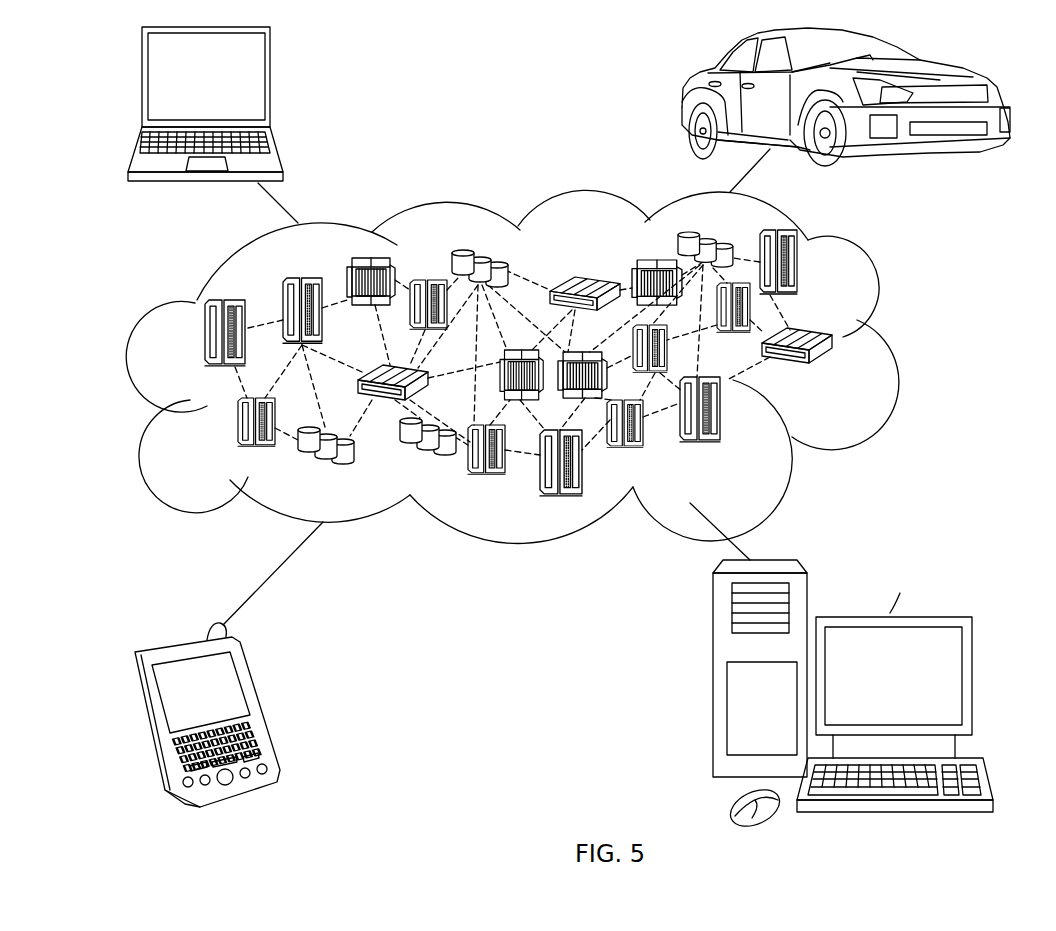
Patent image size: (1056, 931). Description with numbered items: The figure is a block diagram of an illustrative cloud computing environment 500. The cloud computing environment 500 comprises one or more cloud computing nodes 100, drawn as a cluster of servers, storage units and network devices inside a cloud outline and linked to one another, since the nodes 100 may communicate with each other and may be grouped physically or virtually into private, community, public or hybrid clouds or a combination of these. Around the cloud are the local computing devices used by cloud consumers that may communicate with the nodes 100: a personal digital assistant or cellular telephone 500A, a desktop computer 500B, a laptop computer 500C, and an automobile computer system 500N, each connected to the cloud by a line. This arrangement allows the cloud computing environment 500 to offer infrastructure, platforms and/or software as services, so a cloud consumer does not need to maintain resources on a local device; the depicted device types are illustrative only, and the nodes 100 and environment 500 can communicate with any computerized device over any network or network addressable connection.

The cloud computing nodes 100 is at (842, 380).
The cloud computing environment 500 is at (895, 342).
The personal digital assistant (PDA) or cellular telephone 500A is at (262, 703).
The desktop computer 500B is at (853, 681).
The laptop computer 500C is at (272, 85).
The automobile computer system 500N is at (682, 98).